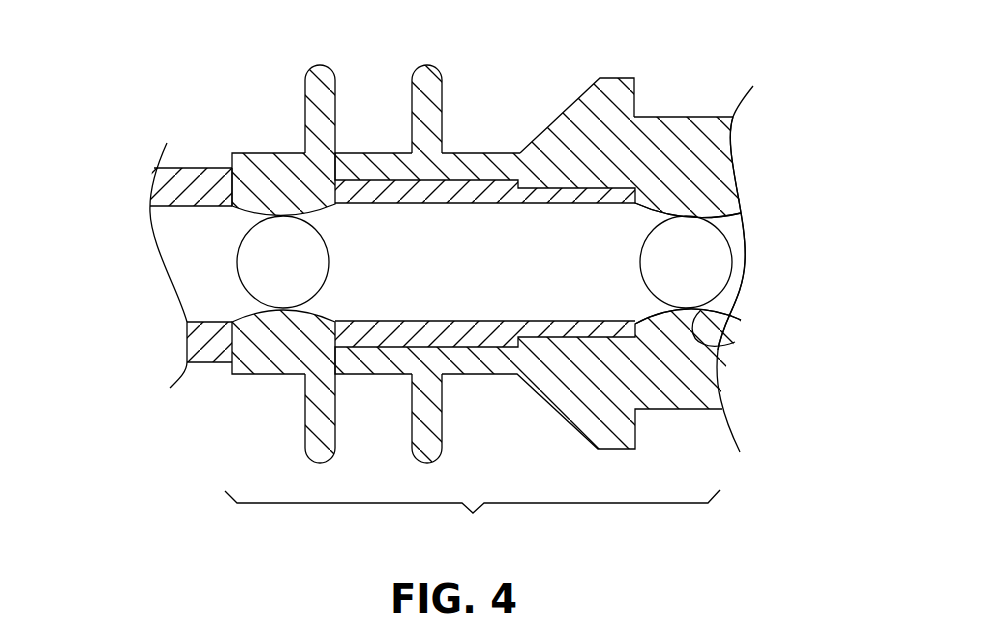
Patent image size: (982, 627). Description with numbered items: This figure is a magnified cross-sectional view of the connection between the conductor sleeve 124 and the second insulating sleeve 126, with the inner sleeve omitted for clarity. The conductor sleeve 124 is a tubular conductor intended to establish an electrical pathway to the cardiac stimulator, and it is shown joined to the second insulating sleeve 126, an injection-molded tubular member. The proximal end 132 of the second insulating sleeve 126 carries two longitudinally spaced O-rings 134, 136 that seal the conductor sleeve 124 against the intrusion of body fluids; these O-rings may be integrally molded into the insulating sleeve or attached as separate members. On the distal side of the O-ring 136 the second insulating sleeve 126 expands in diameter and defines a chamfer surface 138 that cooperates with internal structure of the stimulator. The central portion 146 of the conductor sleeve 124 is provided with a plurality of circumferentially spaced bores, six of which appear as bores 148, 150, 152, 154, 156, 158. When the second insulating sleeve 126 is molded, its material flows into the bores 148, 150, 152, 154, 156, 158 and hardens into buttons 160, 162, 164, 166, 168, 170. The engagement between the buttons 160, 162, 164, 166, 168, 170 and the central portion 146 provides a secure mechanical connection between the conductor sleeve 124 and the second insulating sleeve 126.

The conductor sleeve 124 is at (193, 166).
The second insulating sleeve 126 is at (703, 116).
The proximal end of the second insulating sleeve 132 is at (488, 152).
The O-ring 134 is at (322, 63).
The O-ring 136 is at (428, 63).
The chamfer surface 138 is at (571, 424).
The central portion of the conductor sleeve 146 is at (473, 513).
The bore 148 is at (228, 190).
The bore 150 is at (182, 253).
The bore 152 is at (222, 347).
The bore 154 is at (733, 228).
The bore 156 is at (738, 192).
The bore 158 is at (738, 325).
The button 160 is at (287, 175).
The button 162 is at (268, 285).
The button 164 is at (303, 321).
The button 166 is at (688, 195).
The button 168 is at (710, 262).
The button 170 is at (700, 336).